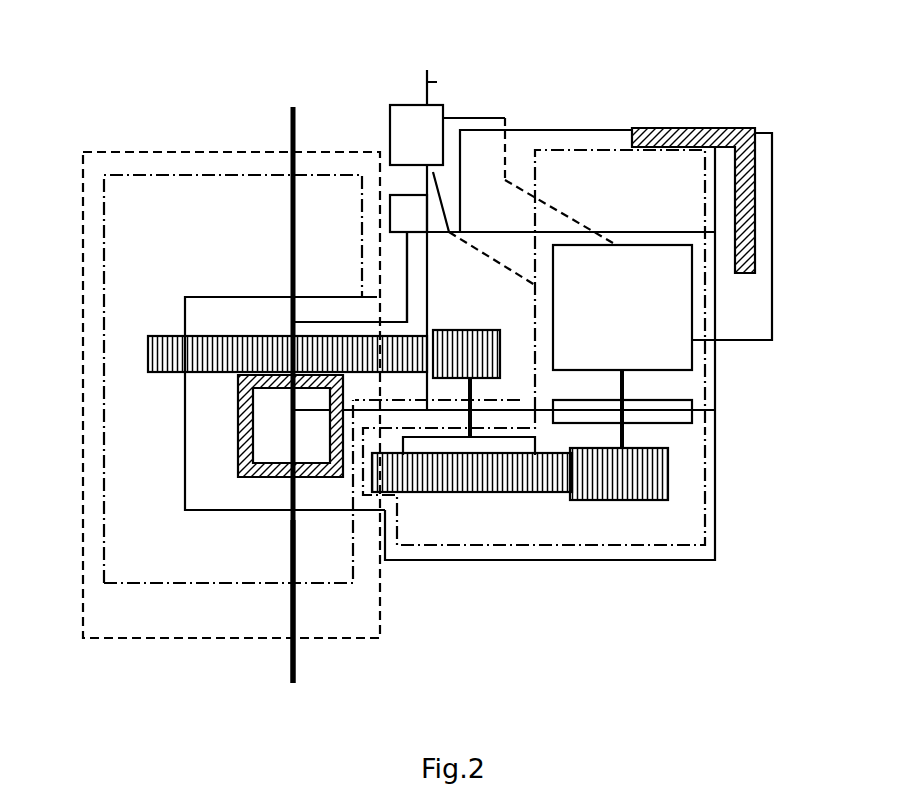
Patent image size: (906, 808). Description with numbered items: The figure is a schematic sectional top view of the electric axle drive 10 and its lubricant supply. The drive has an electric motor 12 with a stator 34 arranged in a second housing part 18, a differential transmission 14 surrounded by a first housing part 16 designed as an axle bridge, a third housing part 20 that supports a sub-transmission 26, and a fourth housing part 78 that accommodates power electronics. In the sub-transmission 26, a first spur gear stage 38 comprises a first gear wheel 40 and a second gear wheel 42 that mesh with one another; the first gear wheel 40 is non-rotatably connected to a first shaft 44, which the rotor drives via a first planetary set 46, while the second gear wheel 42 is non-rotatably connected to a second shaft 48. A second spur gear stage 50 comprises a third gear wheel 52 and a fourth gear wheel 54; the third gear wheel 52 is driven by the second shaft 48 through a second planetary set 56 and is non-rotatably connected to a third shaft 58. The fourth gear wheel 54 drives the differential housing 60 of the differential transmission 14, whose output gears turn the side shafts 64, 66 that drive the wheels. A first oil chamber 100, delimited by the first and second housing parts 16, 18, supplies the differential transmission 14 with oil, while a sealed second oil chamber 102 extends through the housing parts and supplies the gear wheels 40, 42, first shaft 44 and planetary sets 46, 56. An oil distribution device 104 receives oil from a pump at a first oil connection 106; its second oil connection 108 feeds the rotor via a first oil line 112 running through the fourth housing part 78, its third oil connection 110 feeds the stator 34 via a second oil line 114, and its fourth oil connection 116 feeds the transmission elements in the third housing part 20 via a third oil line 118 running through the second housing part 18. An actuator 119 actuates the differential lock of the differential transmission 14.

The electric axle drive 10 is at (744, 112).
The electric motor 12 is at (697, 358).
The differential transmission 14 is at (251, 482).
The first housing part 16 is at (105, 640).
The second housing part 18 is at (713, 409).
The third housing part 20 is at (715, 548).
The sub-transmission 26 is at (686, 475).
The stator 34 is at (720, 302).
The first spur gear stage 38 is at (679, 516).
The first gear wheel 40 is at (623, 501).
The second gear wheel 42 is at (500, 493).
The first shaft 44 is at (625, 448).
The first planetary set 46 is at (655, 400).
The second shaft 48 is at (473, 413).
The second spur gear stage 50 is at (140, 357).
The third gear wheel 52 is at (476, 348).
The fourth gear wheel 54 is at (163, 335).
The second planetary set 56 is at (452, 443).
The third shaft 58 is at (352, 400).
The differential housing 60 is at (238, 463).
The side shaft 64 is at (296, 663).
The side shaft 66 is at (290, 126).
The fourth housing part 78 is at (608, 128).
The first oil chamber 100 is at (104, 535).
The second oil chamber 102 is at (590, 561).
The oil distribution device 104 is at (410, 104).
The first oil connection 106 is at (430, 82).
The second oil connection 108 is at (496, 120).
The third oil connection 110 is at (450, 215).
The first oil line 112 is at (569, 216).
The second oil line 114 is at (553, 270).
The fourth oil connection 116 is at (425, 193).
The third oil line 118 is at (430, 277).
The actuator 119 is at (390, 227).